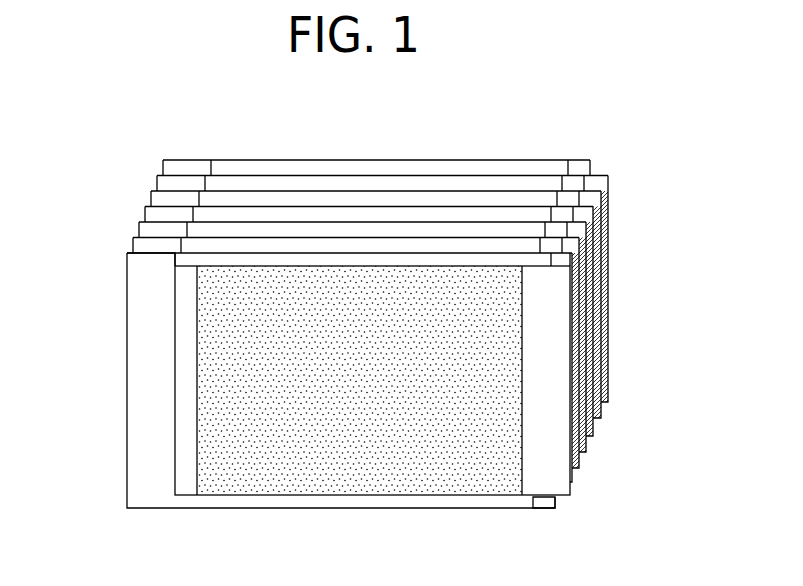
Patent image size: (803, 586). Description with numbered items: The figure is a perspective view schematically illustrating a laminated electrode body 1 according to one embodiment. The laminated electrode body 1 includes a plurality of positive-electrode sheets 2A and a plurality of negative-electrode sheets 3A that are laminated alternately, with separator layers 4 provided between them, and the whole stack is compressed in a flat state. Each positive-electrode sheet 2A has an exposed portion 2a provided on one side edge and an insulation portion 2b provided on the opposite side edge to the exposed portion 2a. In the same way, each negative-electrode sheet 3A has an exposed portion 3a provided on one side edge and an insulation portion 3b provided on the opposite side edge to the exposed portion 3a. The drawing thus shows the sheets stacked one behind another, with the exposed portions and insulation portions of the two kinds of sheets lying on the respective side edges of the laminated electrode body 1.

The laminated electrode body 1 is at (362, 335).
The positive-electrode sheet 2A is at (373, 497).
The exposed portion 2a is at (557, 380).
The insulation portion 2b is at (185, 362).
The negative-electrode sheet 3A is at (312, 172).
The exposed portion 3a is at (168, 167).
The insulation portion 3b is at (520, 509).
The separator layer 4 is at (262, 460).